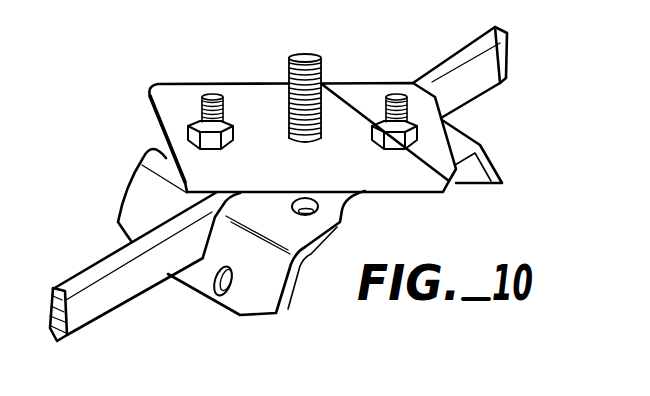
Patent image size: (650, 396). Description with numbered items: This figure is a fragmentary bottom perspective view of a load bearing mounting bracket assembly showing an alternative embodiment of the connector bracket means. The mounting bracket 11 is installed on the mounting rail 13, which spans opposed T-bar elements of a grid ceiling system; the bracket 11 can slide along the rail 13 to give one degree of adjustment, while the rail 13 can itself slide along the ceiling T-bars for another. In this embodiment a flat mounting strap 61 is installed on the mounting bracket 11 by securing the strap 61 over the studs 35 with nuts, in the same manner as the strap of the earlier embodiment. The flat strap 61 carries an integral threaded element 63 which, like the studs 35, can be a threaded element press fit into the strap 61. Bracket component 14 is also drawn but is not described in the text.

The mounting bracket 11 is at (443, 128).
The mounting rail 13 is at (101, 297).
The mounting bracket 14 is at (192, 137).
The studs 35 is at (212, 96).
The flat mounting strap 61 is at (435, 167).
The integral threaded element 63 is at (293, 55).